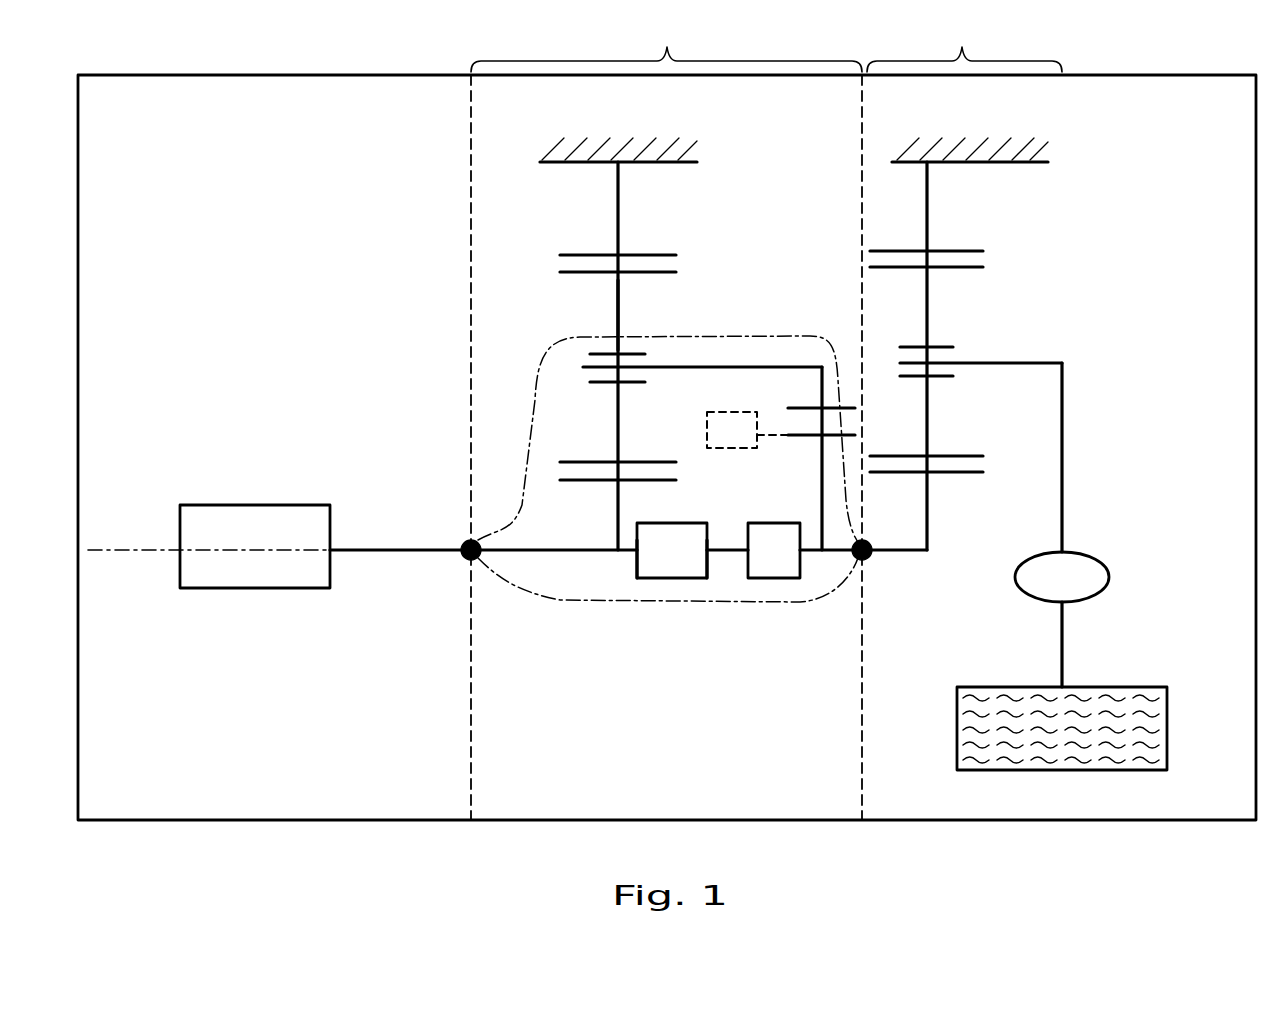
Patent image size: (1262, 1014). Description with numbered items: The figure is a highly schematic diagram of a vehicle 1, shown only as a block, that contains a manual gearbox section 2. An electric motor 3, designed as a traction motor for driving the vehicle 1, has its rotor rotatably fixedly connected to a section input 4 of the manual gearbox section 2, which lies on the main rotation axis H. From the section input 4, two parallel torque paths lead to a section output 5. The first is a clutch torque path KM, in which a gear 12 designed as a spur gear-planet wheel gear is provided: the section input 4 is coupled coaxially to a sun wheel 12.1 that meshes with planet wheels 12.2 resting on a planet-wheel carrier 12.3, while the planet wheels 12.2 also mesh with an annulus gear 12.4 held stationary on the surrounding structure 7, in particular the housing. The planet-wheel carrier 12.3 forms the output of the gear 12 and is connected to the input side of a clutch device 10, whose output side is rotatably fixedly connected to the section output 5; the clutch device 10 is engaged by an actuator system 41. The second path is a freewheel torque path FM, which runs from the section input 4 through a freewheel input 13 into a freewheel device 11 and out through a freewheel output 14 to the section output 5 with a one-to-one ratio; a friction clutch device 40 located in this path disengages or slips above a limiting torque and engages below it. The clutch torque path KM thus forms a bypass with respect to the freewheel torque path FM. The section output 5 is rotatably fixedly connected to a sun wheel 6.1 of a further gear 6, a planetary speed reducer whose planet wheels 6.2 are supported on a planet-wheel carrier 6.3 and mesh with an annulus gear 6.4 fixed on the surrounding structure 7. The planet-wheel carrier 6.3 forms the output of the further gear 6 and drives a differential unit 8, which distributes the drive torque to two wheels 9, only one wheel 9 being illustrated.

The vehicle 1 is at (1248, 114).
The manual gearbox section 2 is at (666, 417).
The electric motor 3 is at (264, 542).
The section input 4 is at (462, 557).
The section output 5 is at (870, 558).
The further gear 6 is at (962, 282).
The sun wheel 6.1 is at (927, 510).
The planet wheels 6.2 is at (927, 302).
The planet-wheel carrier 6.3 is at (1045, 363).
The annulus gear 6.4 is at (927, 197).
The surrounding structure 7 is at (677, 160).
The differential unit 8 is at (1092, 562).
The wheel 9 is at (1147, 692).
The clutch device 10 is at (797, 437).
The freewheel device 11 is at (687, 563).
The gear 12 is at (540, 187).
The sun wheel 12.1 is at (617, 538).
The planet wheels 12.2 is at (618, 302).
The planet-wheel carrier 12.3 is at (672, 367).
The annulus gear 12.4 is at (663, 255).
The freewheel input 13 is at (632, 552).
The freewheel output 14 is at (710, 552).
The friction clutch device 40 is at (790, 563).
The actuator system 41 is at (741, 447).
The main rotation axis H is at (143, 550).
The clutch torque path KM is at (747, 337).
The freewheel torque path FM is at (678, 603).